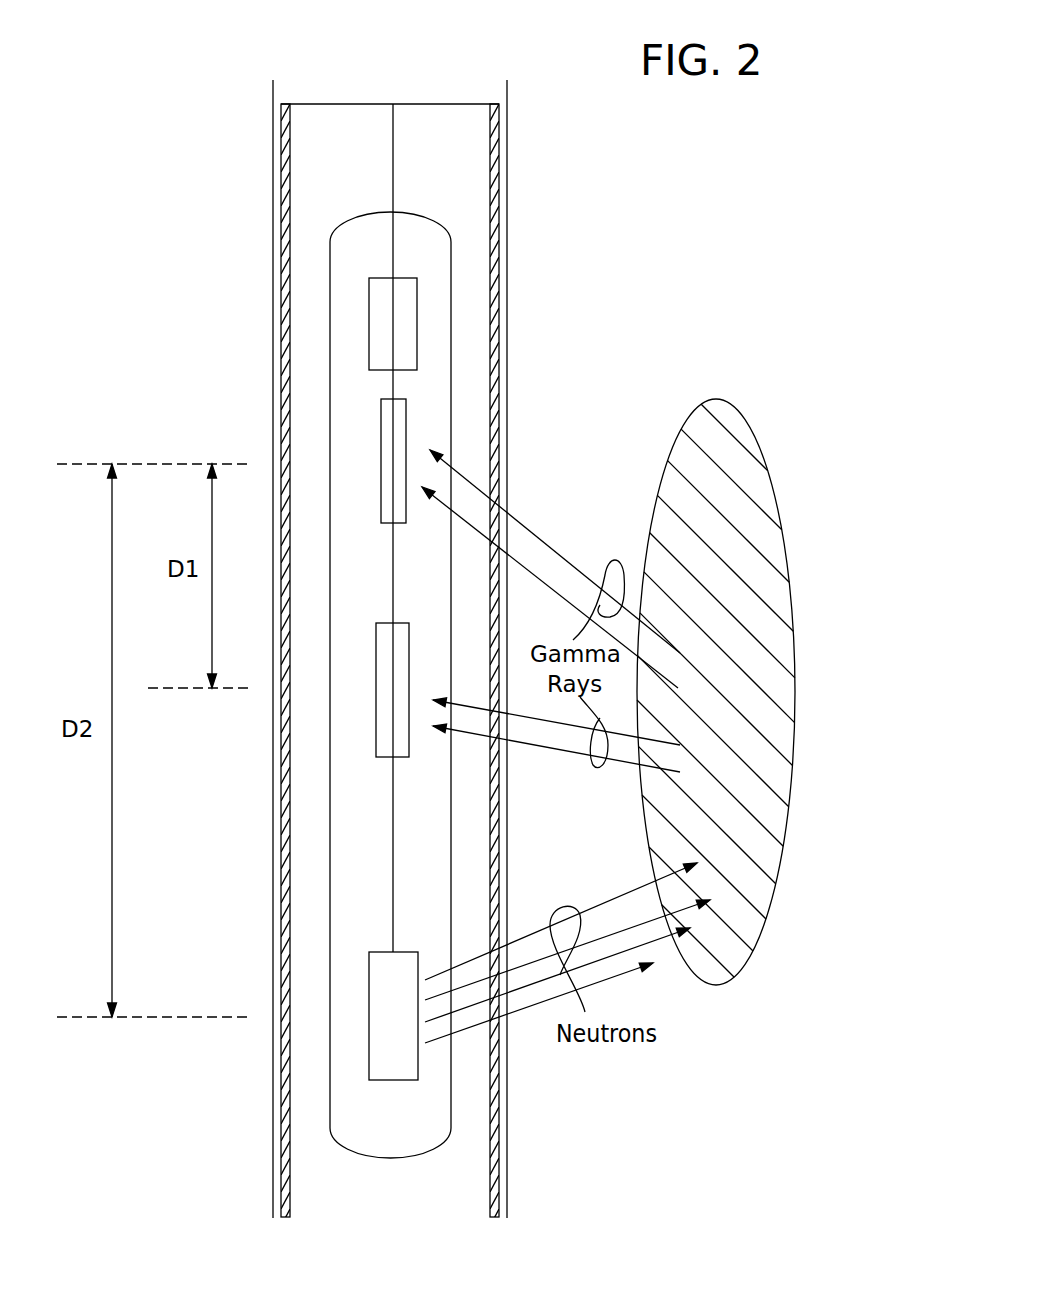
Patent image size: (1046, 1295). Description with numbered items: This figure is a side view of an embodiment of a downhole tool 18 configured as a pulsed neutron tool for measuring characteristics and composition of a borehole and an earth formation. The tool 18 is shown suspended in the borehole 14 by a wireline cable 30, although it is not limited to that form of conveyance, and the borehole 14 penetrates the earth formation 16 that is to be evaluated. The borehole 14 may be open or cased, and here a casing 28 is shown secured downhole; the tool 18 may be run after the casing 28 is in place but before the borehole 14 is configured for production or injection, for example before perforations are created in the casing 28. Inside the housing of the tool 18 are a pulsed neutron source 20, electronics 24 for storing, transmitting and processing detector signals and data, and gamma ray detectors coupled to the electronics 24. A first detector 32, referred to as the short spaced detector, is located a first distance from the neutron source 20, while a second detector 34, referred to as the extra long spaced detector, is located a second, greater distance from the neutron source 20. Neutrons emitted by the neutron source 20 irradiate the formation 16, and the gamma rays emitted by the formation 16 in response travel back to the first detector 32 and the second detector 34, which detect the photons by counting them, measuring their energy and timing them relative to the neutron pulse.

The borehole 14 is at (342, 118).
The earth formation 16 is at (736, 430).
The downhole tool 18 is at (352, 219).
The pulsed neutron source 20 is at (393, 1055).
The electronics 24 is at (393, 323).
The casing 28 is at (498, 193).
The wireline cable 30 is at (396, 133).
The first detector 32 is at (393, 727).
The second detector 34 is at (393, 425).